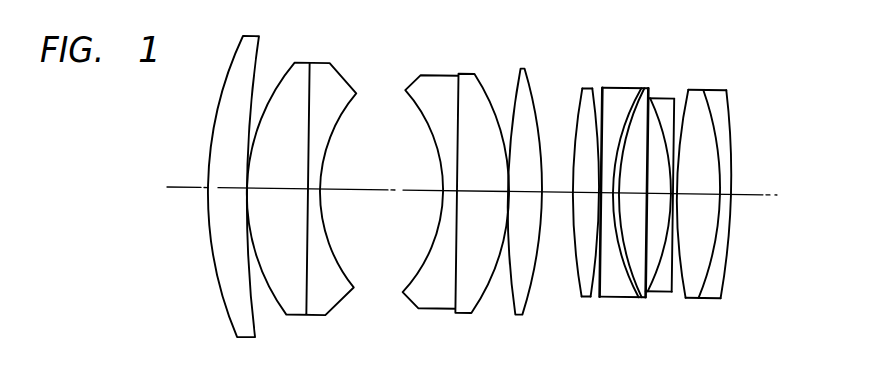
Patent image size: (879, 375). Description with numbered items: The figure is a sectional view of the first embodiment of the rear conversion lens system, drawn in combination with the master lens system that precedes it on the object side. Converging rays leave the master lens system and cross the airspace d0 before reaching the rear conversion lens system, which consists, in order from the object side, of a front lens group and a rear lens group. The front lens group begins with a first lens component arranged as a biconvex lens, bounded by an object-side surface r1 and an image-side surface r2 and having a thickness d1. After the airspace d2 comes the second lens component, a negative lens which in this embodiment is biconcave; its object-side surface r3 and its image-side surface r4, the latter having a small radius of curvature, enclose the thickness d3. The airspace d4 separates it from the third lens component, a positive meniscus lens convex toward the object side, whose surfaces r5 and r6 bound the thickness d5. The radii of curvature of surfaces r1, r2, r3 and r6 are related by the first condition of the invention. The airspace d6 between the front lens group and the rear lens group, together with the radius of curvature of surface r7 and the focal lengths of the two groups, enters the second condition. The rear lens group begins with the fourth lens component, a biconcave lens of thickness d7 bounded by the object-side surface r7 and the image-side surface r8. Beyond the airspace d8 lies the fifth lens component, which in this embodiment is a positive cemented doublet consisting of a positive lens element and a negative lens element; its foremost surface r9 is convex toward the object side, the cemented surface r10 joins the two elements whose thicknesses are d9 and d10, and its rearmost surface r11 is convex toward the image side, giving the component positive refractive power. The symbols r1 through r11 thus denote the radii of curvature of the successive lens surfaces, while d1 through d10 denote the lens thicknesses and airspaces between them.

The airspace between master lens system and rear conversion lens system d0 is at (554, 184).
The thickness of first lens component d1 is at (583, 183).
The airspace between first and second lens components d2 is at (599, 188).
The thickness of second lens component d3 is at (609, 182).
The airspace between second and third lens components d4 is at (616, 190).
The thickness of third lens component d5 is at (643, 81).
The airspace between front lens group and rear lens group d6 is at (649, 175).
The thickness of fourth lens component d7 is at (670, 162).
The airspace between fourth and fifth lens components d8 is at (673, 192).
The thickness of first element of fifth lens component d9 is at (698, 181).
The thickness of second element of fifth lens component d10 is at (729, 193).
The radius of curvature of object-side surface of first lens component r1 is at (578, 273).
The radius of curvature of image-side surface of first lens component r2 is at (591, 294).
The radius of curvature of object-side surface of second lens component r3 is at (601, 292).
The radius of curvature of image-side surface of second lens component r4 is at (637, 291).
The radius of curvature of object-side surface of third lens component r5 is at (641, 292).
The radius of curvature of image-side surface of third lens component r6 is at (649, 292).
The radius of curvature of object-side surface of fourth lens component r7 is at (663, 286).
The radius of curvature of image-side surface of fourth lens component r8 is at (673, 286).
The radius of curvature of foremost surface of fifth lens component r9 is at (687, 292).
The radius of curvature of cemented surface of fifth lens component r10 is at (704, 291).
The radius of curvature of rearmost surface of fifth lens component r11 is at (728, 289).